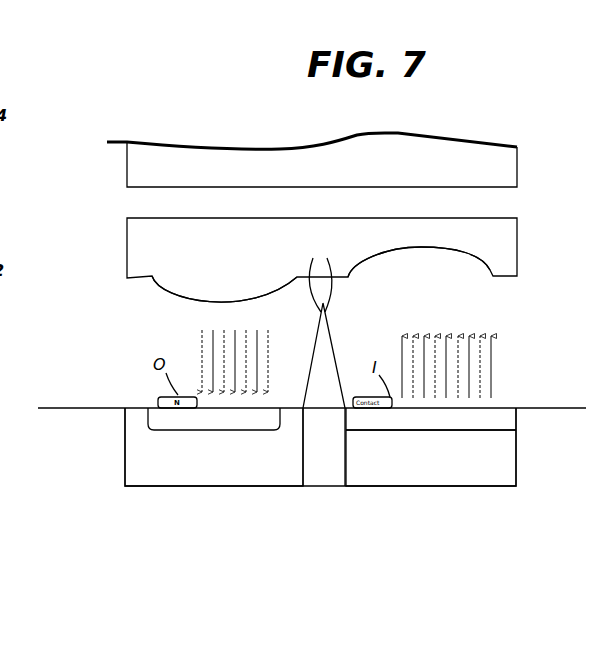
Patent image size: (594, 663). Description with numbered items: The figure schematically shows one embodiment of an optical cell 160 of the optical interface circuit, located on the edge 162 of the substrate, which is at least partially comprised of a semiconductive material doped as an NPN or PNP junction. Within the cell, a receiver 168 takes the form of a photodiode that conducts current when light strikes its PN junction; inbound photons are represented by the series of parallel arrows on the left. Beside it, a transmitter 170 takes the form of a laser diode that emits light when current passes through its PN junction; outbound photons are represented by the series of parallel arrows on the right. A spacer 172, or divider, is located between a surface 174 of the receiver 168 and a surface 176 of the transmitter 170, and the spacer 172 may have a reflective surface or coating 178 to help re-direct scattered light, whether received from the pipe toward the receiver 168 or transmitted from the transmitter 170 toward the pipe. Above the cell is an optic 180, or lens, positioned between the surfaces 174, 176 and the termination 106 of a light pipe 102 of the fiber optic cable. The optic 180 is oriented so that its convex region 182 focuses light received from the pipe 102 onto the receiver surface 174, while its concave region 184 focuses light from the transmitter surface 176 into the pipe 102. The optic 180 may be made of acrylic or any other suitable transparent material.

The light pipe 102 is at (329, 180).
The termination 106 is at (245, 193).
The optical cell 160 is at (551, 500).
The edge 162 is at (73, 404).
The receiver 168 is at (190, 491).
The transmitter 170 is at (405, 490).
The spacer 172 is at (317, 468).
The receiver surface 174 is at (276, 407).
The transmitter surface 176 is at (509, 407).
The reflective coating 178 is at (321, 277).
The optic 180 is at (126, 214).
The convex region 182 is at (160, 292).
The concave region 184 is at (417, 249).